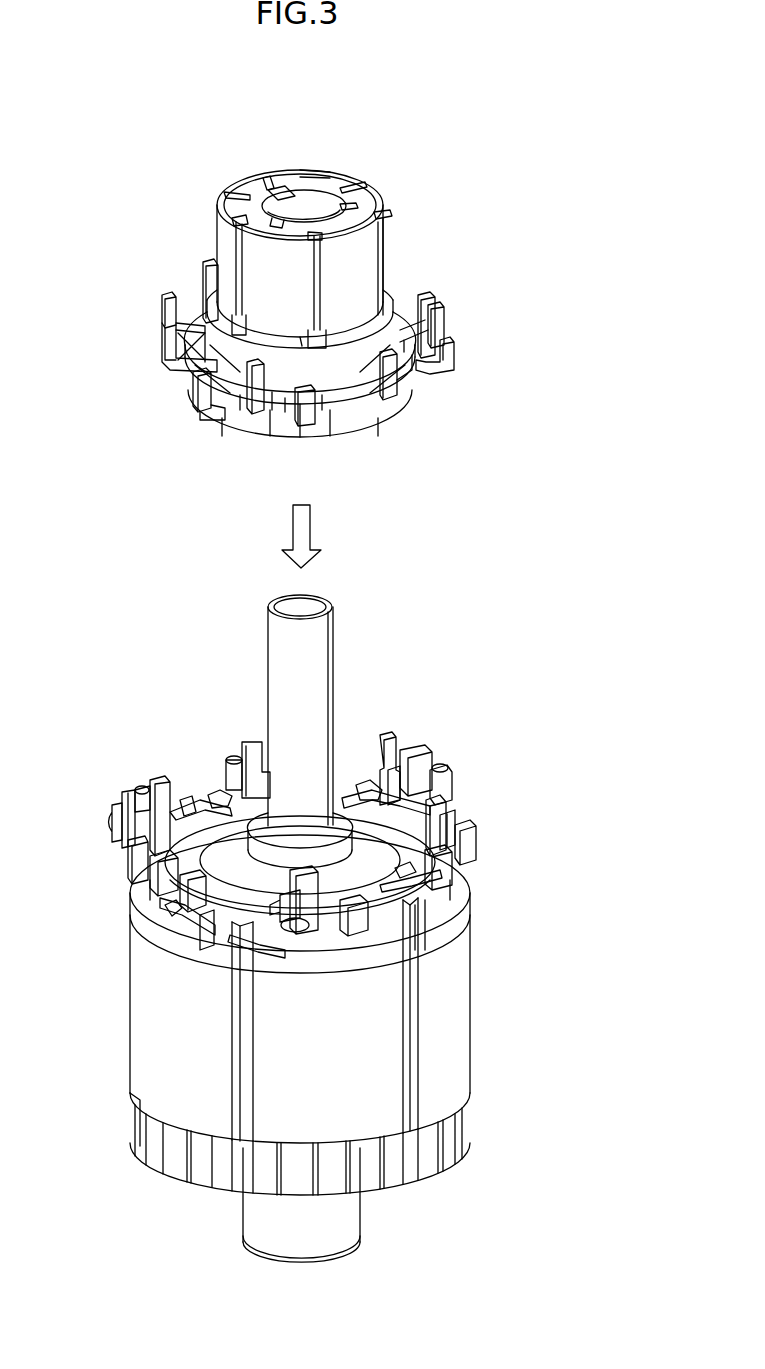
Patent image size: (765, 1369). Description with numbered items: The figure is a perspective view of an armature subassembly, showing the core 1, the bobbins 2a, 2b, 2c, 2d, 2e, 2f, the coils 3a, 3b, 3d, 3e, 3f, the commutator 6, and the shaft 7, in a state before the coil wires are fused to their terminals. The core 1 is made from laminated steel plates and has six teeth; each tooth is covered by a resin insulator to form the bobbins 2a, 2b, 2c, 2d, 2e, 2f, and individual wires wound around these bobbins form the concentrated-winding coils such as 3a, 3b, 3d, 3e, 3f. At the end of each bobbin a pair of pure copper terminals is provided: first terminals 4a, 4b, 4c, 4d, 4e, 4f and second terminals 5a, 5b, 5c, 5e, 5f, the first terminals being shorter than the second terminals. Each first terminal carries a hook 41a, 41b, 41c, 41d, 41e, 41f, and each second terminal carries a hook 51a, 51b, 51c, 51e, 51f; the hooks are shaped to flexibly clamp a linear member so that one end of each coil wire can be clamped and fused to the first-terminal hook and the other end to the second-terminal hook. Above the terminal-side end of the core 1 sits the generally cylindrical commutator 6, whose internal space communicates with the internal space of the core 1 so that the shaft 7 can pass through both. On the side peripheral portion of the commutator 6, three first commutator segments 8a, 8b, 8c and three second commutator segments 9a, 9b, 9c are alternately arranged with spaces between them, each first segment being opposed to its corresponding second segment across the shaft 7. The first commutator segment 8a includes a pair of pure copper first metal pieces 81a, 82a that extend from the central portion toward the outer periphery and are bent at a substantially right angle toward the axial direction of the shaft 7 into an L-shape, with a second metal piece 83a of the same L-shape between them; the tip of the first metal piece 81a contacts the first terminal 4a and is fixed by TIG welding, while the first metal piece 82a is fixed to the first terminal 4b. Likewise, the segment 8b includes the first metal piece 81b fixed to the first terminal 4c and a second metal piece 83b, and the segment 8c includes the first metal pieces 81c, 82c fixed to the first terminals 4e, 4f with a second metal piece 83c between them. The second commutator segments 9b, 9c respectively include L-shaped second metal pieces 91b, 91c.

The core 1 is at (470, 1065).
The bobbin 2a is at (370, 1180).
The bobbin 2b is at (158, 1143).
The bobbin 2c is at (186, 812).
The bobbin 2d is at (222, 796).
The bobbin 2e is at (368, 792).
The bobbin 2f is at (470, 890).
The coil 3a is at (285, 950).
The coil 3b is at (235, 905).
The coil 3d is at (206, 806).
The coil 3e is at (352, 792).
The coil 3f is at (450, 912).
The first terminal 4a is at (303, 945).
The first terminal 4b is at (148, 930).
The first terminal 4c is at (162, 792).
The first terminal 4d is at (248, 760).
The first terminal 4e is at (432, 775).
The first terminal 4f is at (462, 820).
The hook 41a is at (275, 922).
The hook 41b is at (135, 900).
The hook 41c is at (142, 792).
The hook 41d is at (238, 775).
The hook 41e is at (455, 775).
The hook 41f is at (480, 845).
The second terminal 5a is at (413, 925).
The second terminal 5b is at (130, 853).
The second terminal 5c is at (122, 801).
The second terminal 5e is at (382, 740).
The second terminal 5f is at (475, 830).
The hook 51a is at (400, 915).
The hook 51b is at (132, 878).
The hook 51c is at (112, 826).
The hook 51e is at (400, 772).
The hook 51f is at (470, 870).
The commutator 6 is at (384, 118).
The shaft 7 is at (320, 630).
The first commutator segment 8a is at (262, 268).
The first commutator segment 8b is at (266, 180).
The first commutator segment 8c is at (380, 194).
The second commutator segment 9a is at (320, 172).
The second commutator segment 9b is at (368, 250).
The second commutator segment 9c is at (218, 203).
The first metal piece 81a is at (306, 422).
The first metal piece 81b is at (162, 308).
The first metal piece 81c is at (428, 300).
The first metal piece 82a is at (200, 395).
The first metal piece 82c is at (452, 352).
The second metal piece 83a is at (256, 402).
The second metal piece 83b is at (203, 278).
The second metal piece 83c is at (445, 318).
The second metal piece 91b is at (390, 402).
The second metal piece 91c is at (158, 347).